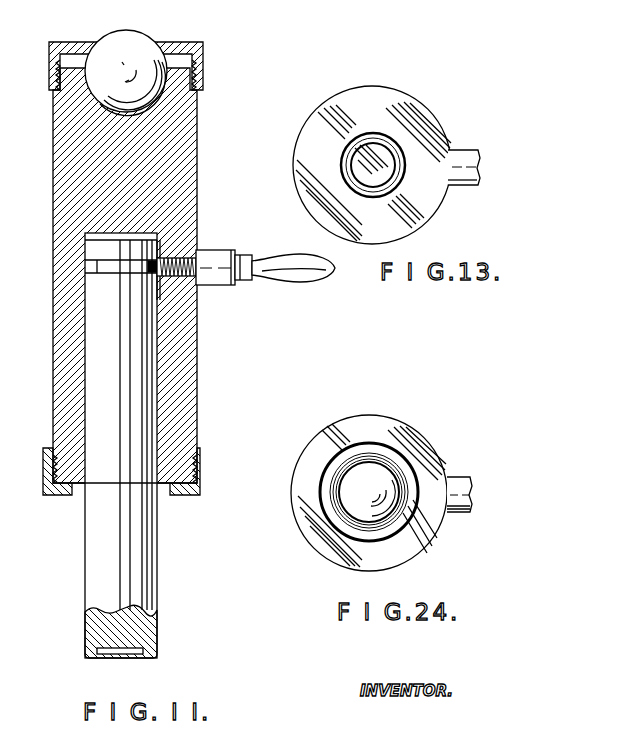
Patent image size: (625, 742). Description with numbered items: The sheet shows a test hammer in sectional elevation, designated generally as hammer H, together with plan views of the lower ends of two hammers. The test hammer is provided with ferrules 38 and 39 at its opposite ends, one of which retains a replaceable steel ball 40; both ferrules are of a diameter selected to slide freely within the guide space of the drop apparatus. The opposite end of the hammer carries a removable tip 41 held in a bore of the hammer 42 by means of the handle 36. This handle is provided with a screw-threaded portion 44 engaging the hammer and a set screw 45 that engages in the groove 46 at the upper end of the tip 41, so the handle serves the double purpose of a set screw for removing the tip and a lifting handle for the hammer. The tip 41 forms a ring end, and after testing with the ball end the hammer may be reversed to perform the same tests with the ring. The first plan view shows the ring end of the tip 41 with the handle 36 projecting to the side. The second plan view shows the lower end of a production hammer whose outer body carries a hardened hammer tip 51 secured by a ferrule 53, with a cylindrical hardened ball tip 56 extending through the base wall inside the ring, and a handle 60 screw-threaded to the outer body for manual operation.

In FIG. 11, the holder body H is at (197, 356).
In FIG. 11, the ferrule 38 is at (203, 74).
In FIG. 11, the replaceable steel ball 40 is at (137, 43).
In FIG. 11, the hammer 42 is at (162, 400).
In FIG. 11, the groove 46 is at (92, 266).
In FIG. 11, the set screw 45 is at (161, 254).
In FIG. 11, the screw-threaded portion 44 is at (191, 283).
In FIG. 11, the handle 36 is at (217, 250).
In FIG. 13, the handle 36 is at (468, 186).
In FIG. 11, the ferrule 39 is at (51, 470).
In FIG. 13, the ferrule 39 is at (433, 113).
In FIG. 11, the removable tip 41 is at (158, 640).
In FIG. 13, the removable tip 41 is at (403, 187).
In FIG. 24, the ferrule 53 is at (361, 397).
In FIG. 24, the hardened hammer tip 51 is at (321, 466).
In FIG. 24, the cylindrical hardened ball tip 56 is at (369, 492).
In FIG. 24, the handle 60 is at (453, 513).